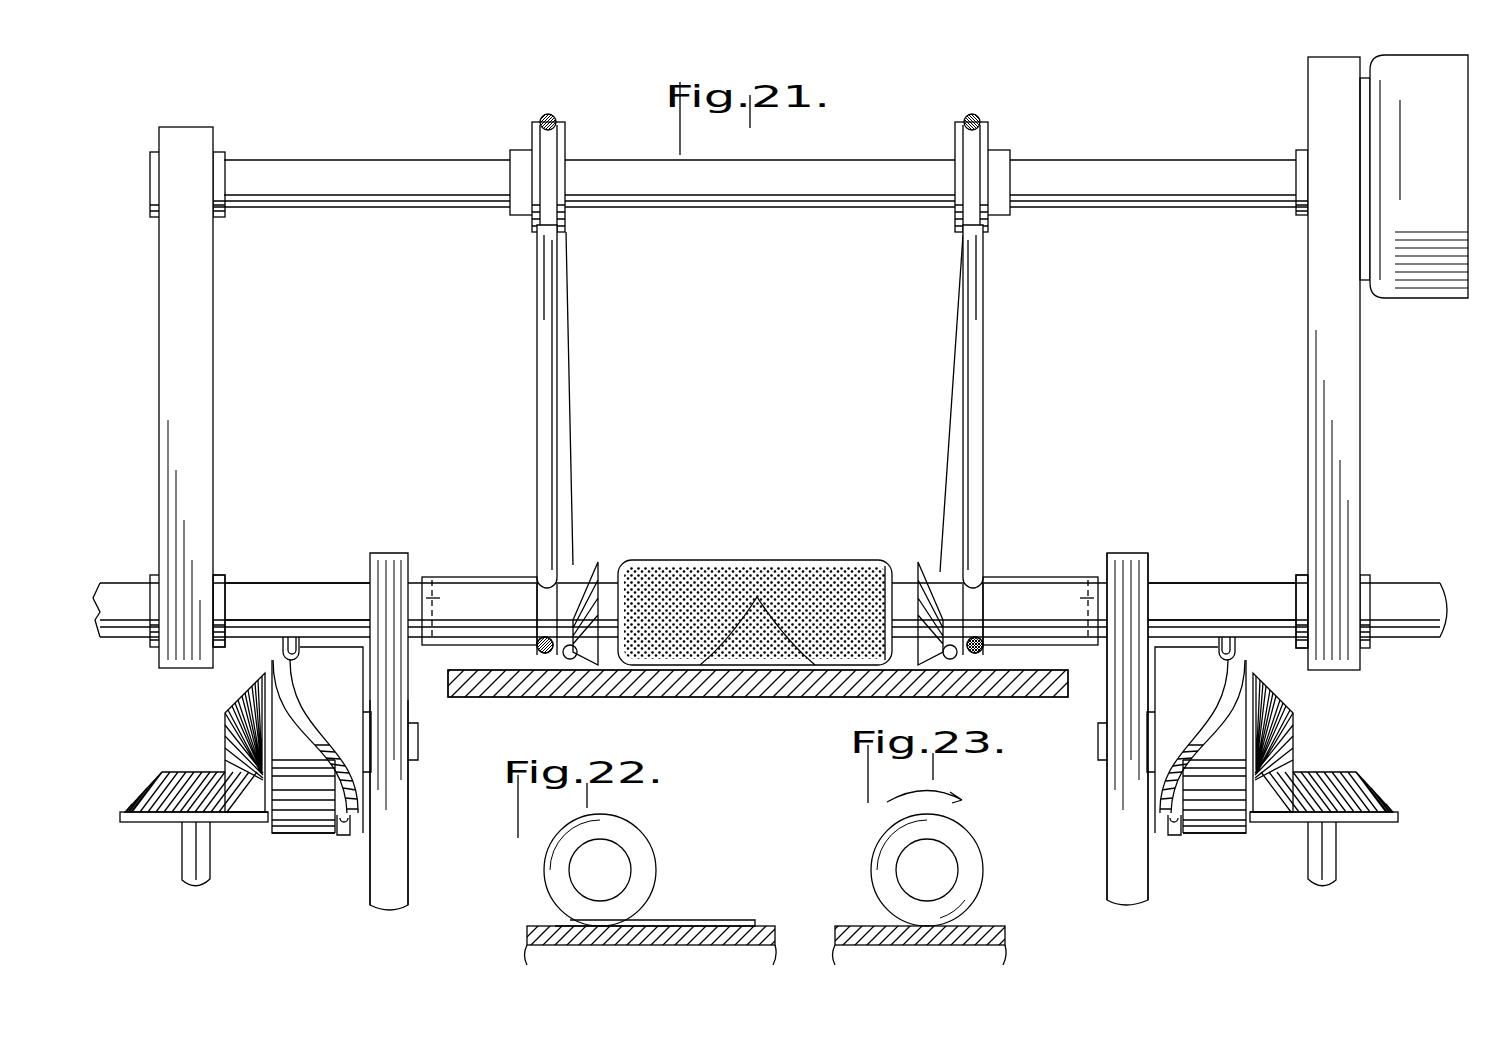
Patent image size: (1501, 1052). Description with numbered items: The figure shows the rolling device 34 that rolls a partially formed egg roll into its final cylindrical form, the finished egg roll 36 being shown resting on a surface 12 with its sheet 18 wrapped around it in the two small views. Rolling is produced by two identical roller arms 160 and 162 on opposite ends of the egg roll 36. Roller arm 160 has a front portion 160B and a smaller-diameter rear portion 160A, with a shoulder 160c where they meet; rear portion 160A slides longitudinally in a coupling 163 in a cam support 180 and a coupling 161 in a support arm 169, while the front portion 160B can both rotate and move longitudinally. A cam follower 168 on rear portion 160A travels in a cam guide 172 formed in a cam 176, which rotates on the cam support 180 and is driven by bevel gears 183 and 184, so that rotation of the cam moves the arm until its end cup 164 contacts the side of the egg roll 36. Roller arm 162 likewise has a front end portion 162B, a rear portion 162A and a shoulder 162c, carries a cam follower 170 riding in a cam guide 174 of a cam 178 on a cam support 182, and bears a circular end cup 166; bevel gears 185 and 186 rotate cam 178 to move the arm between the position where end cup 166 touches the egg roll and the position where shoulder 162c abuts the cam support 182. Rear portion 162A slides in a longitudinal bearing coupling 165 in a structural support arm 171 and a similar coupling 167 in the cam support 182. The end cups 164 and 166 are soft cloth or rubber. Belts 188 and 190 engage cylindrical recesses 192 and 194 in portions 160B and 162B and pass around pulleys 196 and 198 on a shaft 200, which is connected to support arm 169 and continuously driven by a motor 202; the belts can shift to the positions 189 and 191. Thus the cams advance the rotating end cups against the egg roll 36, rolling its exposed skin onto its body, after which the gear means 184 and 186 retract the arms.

In FIG. 22, the support surface 12 is at (530, 945).
In FIG. 23, the support surface 12 is at (1003, 928).
In FIG. 22, the sheet 18 is at (707, 920).
In FIG. 21, the rolling device 34 is at (775, 333).
In FIG. 21, the egg roll 36 is at (690, 565).
In FIG. 23, the egg roll 36 is at (965, 870).
In FIG. 21, the roller arm 160 is at (462, 562).
In FIG. 21, the rear portion 160A is at (287, 590).
In FIG. 21, the front portion 160B is at (496, 582).
In FIG. 21, the shoulder 160c is at (418, 647).
In FIG. 21, the coupling 161 is at (222, 572).
In FIG. 21, the roller arm 162 is at (1102, 546).
In FIG. 21, the rear portion 162A is at (1240, 595).
In FIG. 21, the front end portion 162B is at (1044, 585).
In FIG. 21, the shoulder 162c is at (1097, 655).
In FIG. 21, the coupling 163 is at (370, 555).
In FIG. 21, the end cup 164 is at (600, 568).
In FIG. 21, the longitudinal bearing coupling 165 is at (1367, 578).
In FIG. 21, the end cup 166 is at (918, 568).
In FIG. 21, the longitudinal bearing coupling 167 is at (1150, 580).
In FIG. 21, the cam follower 168 is at (283, 655).
In FIG. 21, the support arm 169 is at (213, 415).
In FIG. 21, the cam follower 170 is at (1223, 661).
In FIG. 21, the structural support arm 171 is at (1352, 428).
In FIG. 21, the cam guide 172 is at (348, 820).
In FIG. 21, the cam guide 174 is at (1172, 820).
In FIG. 21, the cam 176 is at (300, 830).
In FIG. 21, the cam 178 is at (1222, 828).
In FIG. 21, the cam support 180 is at (398, 810).
In FIG. 21, the cam support 182 is at (1108, 775).
In FIG. 21, the bevel gear 183 is at (235, 708).
In FIG. 21, the bevel gear 184 is at (168, 775).
In FIG. 21, the bevel gear 185 is at (1292, 722).
In FIG. 21, the bevel gear 186 is at (1370, 790).
In FIG. 21, the belt 188 is at (537, 415).
In FIG. 21, the shifted belt position 189 is at (572, 423).
In FIG. 21, the belt 190 is at (978, 383).
In FIG. 21, the shifted belt position 191 is at (950, 410).
In FIG. 21, the cylindrical recess 192 is at (540, 580).
In FIG. 21, the cylindrical recess 194 is at (980, 580).
In FIG. 21, the pulley 196 is at (566, 130).
In FIG. 21, the pulley 198 is at (990, 125).
In FIG. 21, the shaft 200 is at (335, 200).
In FIG. 21, the motor 202 is at (1423, 288).